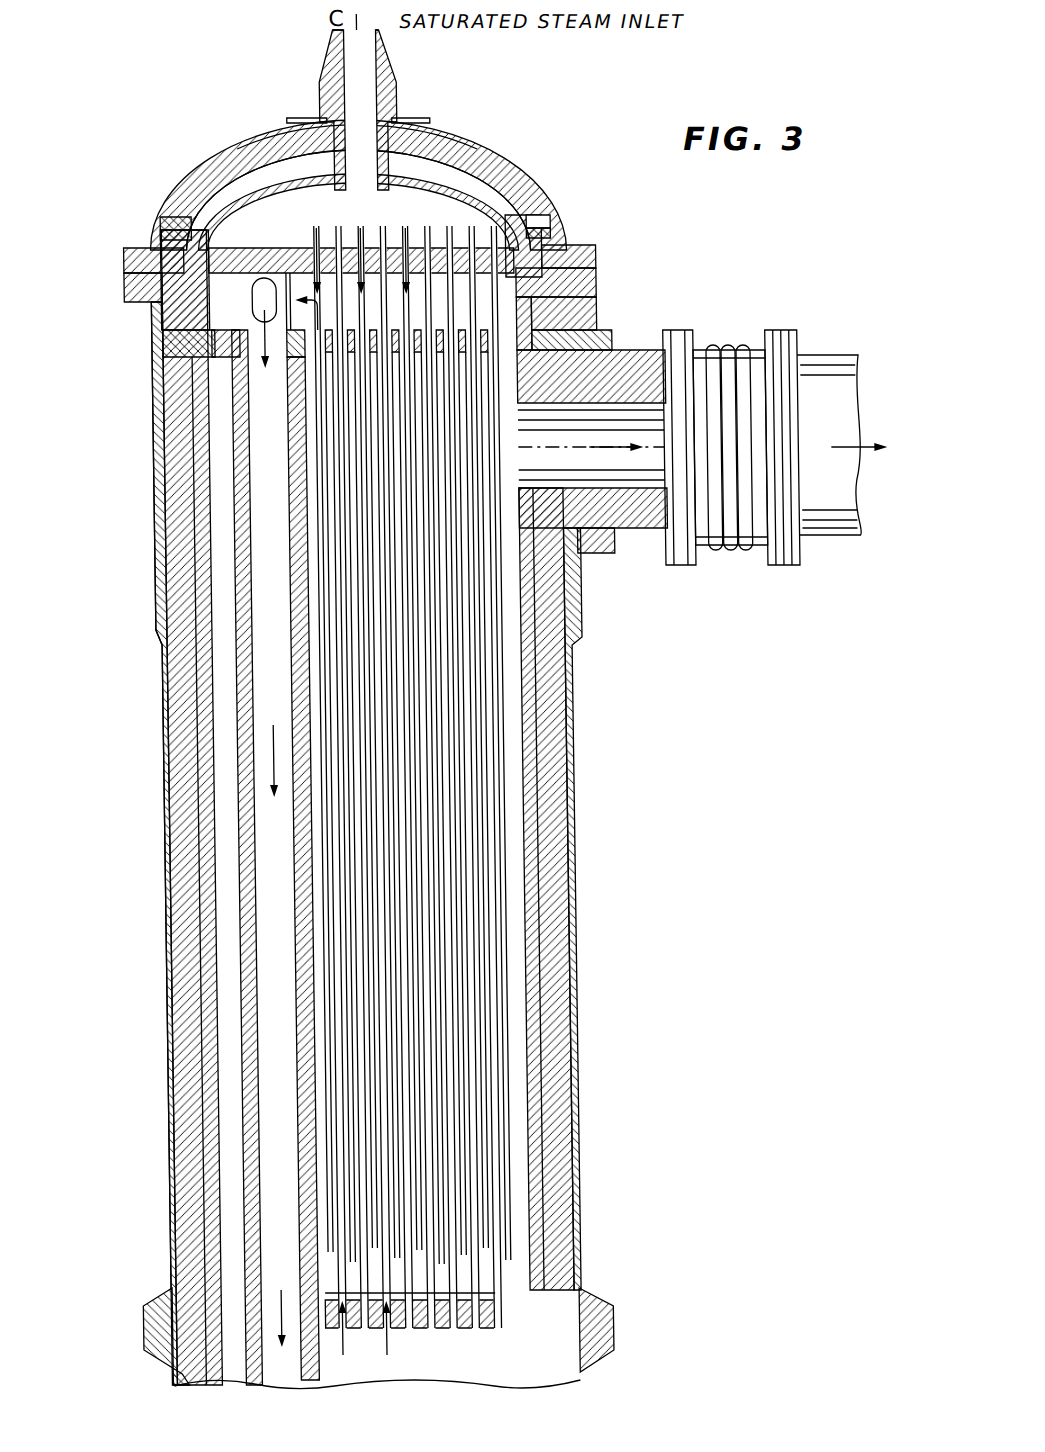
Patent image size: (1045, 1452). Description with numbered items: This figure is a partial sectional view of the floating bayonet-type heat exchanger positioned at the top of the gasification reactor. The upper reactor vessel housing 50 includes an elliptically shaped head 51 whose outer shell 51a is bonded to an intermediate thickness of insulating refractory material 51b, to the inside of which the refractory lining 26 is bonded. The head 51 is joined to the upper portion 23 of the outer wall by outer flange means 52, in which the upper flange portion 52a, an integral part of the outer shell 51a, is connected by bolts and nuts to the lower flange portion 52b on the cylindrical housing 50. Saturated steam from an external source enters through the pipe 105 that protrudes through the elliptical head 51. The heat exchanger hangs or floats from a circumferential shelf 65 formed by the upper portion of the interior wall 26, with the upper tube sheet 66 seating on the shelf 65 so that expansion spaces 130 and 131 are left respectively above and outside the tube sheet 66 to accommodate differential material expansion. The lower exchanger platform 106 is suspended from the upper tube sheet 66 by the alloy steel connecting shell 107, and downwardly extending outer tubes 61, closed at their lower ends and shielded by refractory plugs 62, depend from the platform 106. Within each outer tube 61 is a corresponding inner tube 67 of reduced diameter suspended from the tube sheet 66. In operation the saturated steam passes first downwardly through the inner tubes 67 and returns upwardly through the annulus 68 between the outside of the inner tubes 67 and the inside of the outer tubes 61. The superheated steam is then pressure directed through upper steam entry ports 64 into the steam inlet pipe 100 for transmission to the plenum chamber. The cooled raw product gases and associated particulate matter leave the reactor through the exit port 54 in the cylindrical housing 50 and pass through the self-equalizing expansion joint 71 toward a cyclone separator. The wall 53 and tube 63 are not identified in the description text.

The upper portion of outer wall 23 is at (563, 770).
The refractory lining 26 is at (513, 200).
The upper reactor vessel housing 50 is at (134, 431).
The elliptically shaped head 51 is at (452, 118).
The outer shell 51a is at (488, 130).
The insulating refractory material 51b is at (508, 165).
The outer flange means 52 is at (150, 270).
The upper flange portion 52a is at (588, 265).
The lower flange portion 52b is at (588, 290).
The vessel wall 53 is at (526, 672).
The exit port 54 is at (652, 398).
The outer tubes 61 is at (318, 262).
The refractory plugs 62 is at (472, 1302).
The central tube 63 is at (330, 432).
The upper steam entry ports 64 is at (255, 313).
The circumferential shelf 65 is at (548, 335).
The upper tube sheet 66 is at (175, 233).
The inner tubes 67 is at (407, 292).
The annulus 68 is at (310, 420).
The self-equalizing expansion joint 71 is at (727, 553).
The steam inlet pipe 100 is at (234, 768).
The pipe 105 is at (345, 88).
The lower exchanger platform 106 is at (240, 365).
The connecting shell 107 is at (228, 348).
The upper expansion space 130 is at (553, 233).
The outer expansion space 131 is at (560, 250).